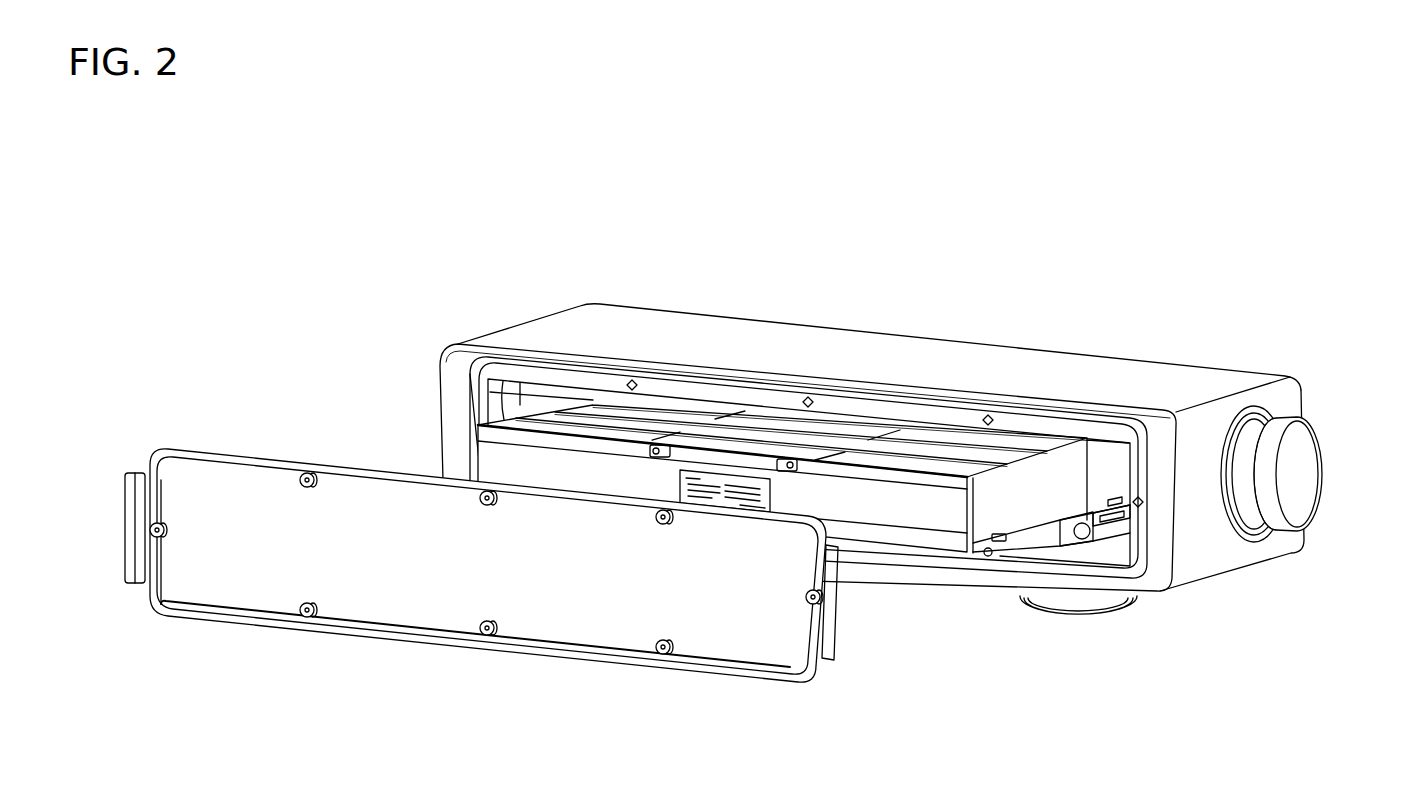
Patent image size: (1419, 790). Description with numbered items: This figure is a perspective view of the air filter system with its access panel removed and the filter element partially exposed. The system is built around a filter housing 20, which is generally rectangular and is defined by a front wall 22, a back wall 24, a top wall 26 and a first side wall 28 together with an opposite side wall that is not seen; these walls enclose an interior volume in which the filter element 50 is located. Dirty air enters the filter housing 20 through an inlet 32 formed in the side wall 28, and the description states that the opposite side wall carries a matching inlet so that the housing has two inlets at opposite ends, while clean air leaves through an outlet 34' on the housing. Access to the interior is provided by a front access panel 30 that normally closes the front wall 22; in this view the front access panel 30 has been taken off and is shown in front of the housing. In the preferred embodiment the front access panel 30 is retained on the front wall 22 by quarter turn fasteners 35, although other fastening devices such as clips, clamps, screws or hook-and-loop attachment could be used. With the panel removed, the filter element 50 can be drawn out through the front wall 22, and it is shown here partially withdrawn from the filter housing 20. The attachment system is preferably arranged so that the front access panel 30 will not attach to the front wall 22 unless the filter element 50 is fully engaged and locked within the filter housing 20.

The filter housing 20 is at (1168, 365).
The front wall 22 is at (453, 365).
The back wall 24 is at (1305, 395).
The top wall 26 is at (708, 331).
The first side wall 28 is at (1227, 558).
The front access panel 30 is at (153, 601).
The inlet 32 is at (1313, 463).
The outlet 34' is at (1083, 649).
The quarter turn fasteners 35 is at (482, 632).
The filter element 50 is at (1005, 542).